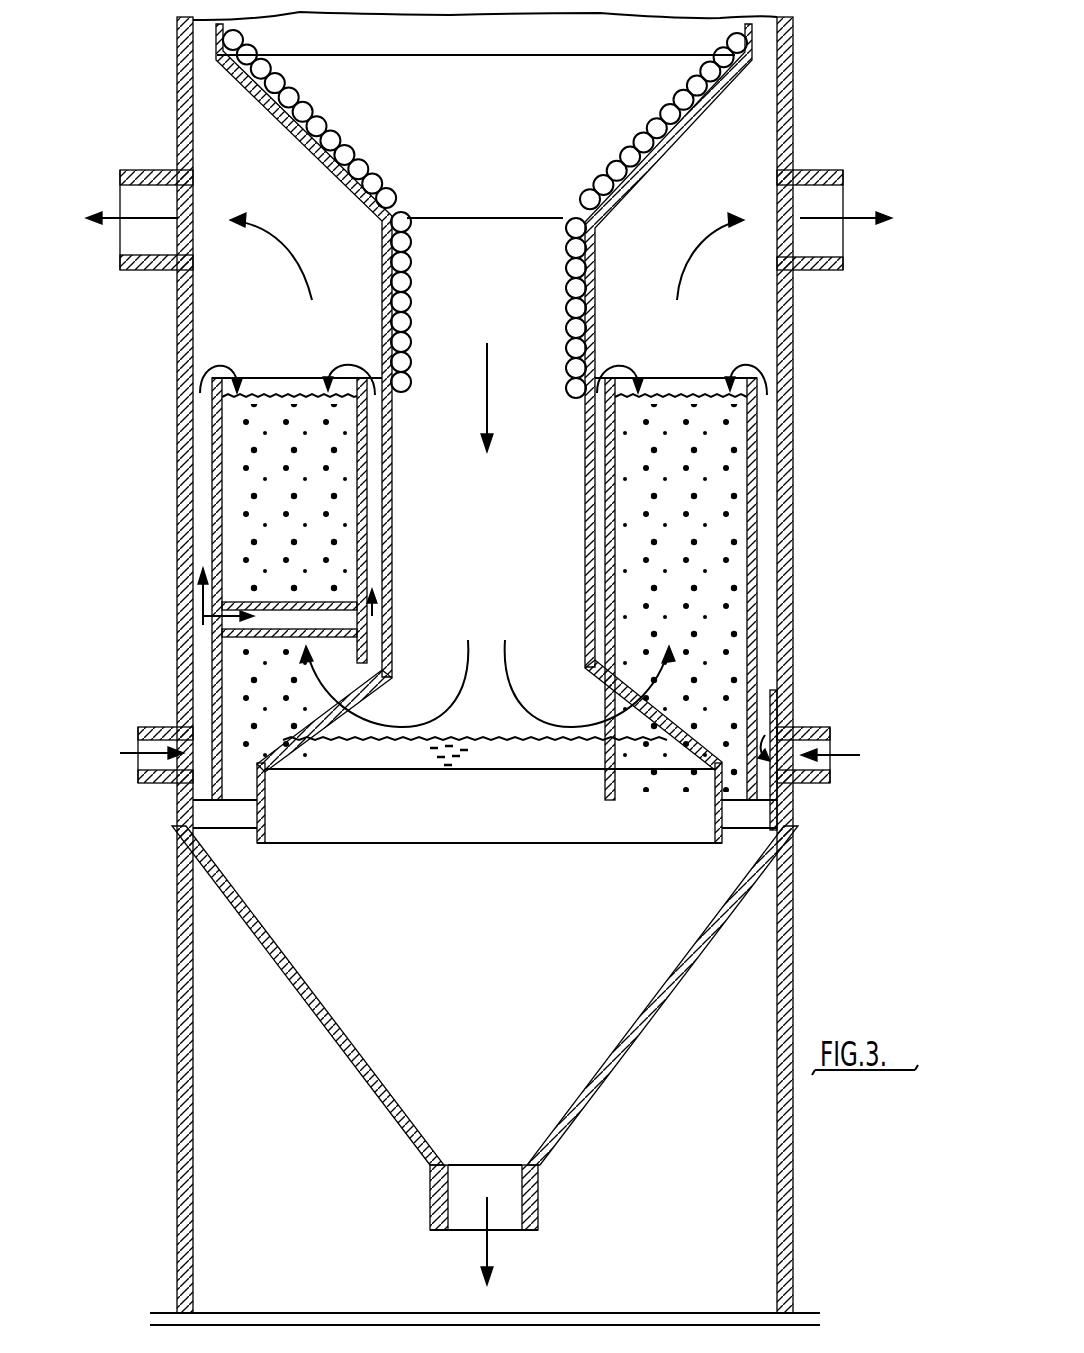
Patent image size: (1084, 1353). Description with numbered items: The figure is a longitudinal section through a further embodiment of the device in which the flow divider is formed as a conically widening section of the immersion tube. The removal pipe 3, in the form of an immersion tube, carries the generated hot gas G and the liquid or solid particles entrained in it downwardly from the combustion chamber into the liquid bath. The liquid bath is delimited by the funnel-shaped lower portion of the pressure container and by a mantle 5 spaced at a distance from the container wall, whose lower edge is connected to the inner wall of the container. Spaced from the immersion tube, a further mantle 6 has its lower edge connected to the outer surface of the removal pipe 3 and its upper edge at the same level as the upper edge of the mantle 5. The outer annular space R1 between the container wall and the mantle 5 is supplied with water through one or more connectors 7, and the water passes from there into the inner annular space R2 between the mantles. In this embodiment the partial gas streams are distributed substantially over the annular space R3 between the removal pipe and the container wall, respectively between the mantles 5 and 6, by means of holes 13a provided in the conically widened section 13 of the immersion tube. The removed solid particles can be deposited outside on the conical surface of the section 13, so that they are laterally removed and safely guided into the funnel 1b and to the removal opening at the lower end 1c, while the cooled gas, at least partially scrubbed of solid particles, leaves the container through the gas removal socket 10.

The gas removal socket 10 is at (145, 272).
The connector 7 is at (155, 785).
The removal pipe 3 is at (393, 510).
The mantle 6 is at (600, 586).
The mantle 5 is at (788, 665).
The conically widened section 13 is at (330, 742).
The holes 13a is at (352, 693).
The funnel 1b is at (282, 953).
The lower end 1c is at (430, 1203).
The outer annular space R1 is at (767, 492).
The inner annular space R2 is at (600, 503).
The annular space R3 is at (247, 498).
The hot gas G is at (488, 405).